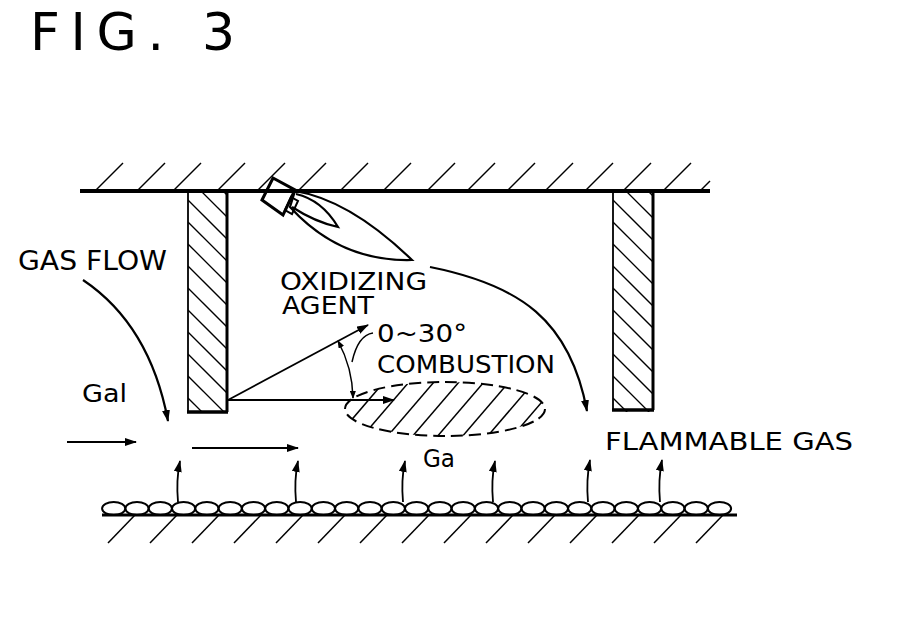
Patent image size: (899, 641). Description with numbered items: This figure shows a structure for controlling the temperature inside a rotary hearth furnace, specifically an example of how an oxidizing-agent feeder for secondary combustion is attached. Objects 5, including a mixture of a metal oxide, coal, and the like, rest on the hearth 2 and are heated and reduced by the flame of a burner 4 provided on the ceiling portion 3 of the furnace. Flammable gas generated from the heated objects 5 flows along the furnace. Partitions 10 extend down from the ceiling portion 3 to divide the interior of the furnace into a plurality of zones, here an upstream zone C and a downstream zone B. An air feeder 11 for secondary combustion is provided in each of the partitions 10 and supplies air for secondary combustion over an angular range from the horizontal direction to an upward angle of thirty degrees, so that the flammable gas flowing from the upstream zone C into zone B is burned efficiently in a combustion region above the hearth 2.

The hearth 2 is at (373, 542).
The ceiling portion 3 is at (545, 166).
The burner 4 is at (283, 184).
The objects 5 is at (605, 510).
The partition 10 is at (210, 205).
The air feeder for secondary combustion 11 is at (234, 389).
The zone B is at (452, 222).
The zone C is at (138, 226).